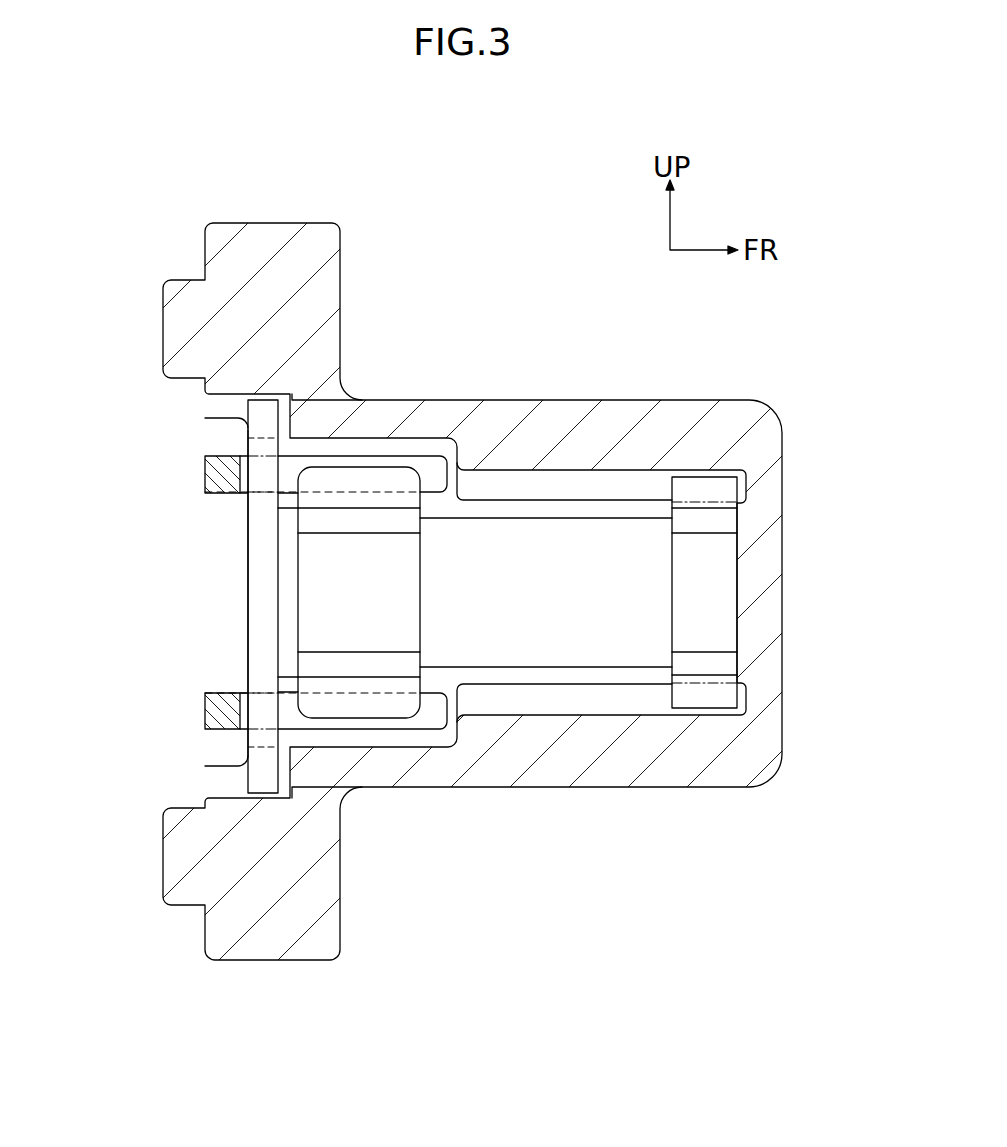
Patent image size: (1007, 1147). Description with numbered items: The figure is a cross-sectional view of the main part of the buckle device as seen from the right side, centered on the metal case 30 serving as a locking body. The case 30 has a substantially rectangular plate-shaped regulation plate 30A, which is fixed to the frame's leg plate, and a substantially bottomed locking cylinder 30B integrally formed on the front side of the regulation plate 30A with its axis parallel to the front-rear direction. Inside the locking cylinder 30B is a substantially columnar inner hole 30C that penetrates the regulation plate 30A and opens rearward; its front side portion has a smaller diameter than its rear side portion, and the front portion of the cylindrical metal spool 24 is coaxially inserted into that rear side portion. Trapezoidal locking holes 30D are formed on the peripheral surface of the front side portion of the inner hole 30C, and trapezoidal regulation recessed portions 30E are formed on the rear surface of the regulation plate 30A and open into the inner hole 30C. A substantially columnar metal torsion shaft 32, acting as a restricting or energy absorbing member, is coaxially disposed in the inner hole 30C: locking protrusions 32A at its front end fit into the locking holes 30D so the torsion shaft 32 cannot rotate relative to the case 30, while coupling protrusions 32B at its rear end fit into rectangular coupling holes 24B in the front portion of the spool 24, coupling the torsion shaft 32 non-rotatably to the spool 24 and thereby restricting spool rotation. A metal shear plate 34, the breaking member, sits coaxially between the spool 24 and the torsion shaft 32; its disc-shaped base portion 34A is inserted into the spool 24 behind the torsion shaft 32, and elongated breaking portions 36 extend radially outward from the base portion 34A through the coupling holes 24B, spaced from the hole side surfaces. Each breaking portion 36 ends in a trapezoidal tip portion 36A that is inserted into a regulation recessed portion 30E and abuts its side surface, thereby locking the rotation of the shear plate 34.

The case 30 is at (520, 399).
The regulation plate 30A is at (342, 254).
The locking cylinder 30B is at (698, 399).
The inner hole 30C is at (550, 712).
The locking hole 30D is at (570, 486).
The regulation recessed portion 30E is at (205, 404).
The torsion shaft 32 is at (613, 515).
The locking protrusion 32A is at (705, 469).
The coupling protrusion 32B is at (367, 464).
The spool 24 is at (228, 453).
The coupling hole 24B is at (434, 466).
The shear plate 34 is at (247, 532).
The base portion 34A is at (247, 628).
The breaking portion 36 is at (232, 493).
The tip portion 36A is at (262, 398).